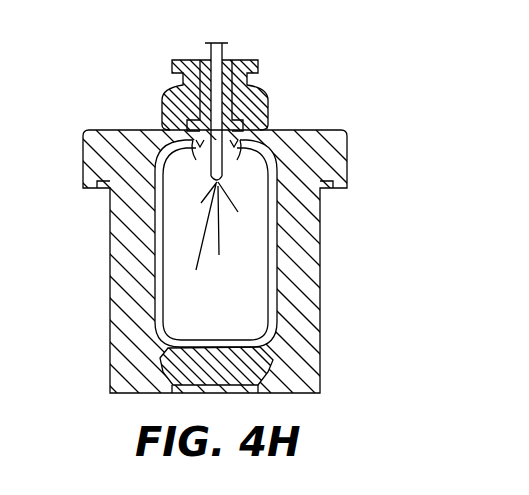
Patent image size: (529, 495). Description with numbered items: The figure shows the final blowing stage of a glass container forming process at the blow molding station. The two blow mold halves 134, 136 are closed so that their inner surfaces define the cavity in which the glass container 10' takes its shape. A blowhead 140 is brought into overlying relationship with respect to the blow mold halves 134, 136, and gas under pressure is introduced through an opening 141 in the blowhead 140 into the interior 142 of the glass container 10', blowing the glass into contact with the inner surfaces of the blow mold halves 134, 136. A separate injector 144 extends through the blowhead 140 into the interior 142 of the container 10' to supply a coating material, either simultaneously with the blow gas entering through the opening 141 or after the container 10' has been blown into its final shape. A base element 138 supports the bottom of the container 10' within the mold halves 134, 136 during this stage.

The glass container 10' is at (264, 243).
The blow mold half 134 is at (84, 152).
The blow mold half 136 is at (349, 152).
The base support 138 is at (160, 363).
The blowhead 140 is at (268, 90).
The opening 141 is at (178, 82).
The interior 142 is at (182, 253).
The injector 144 is at (196, 160).